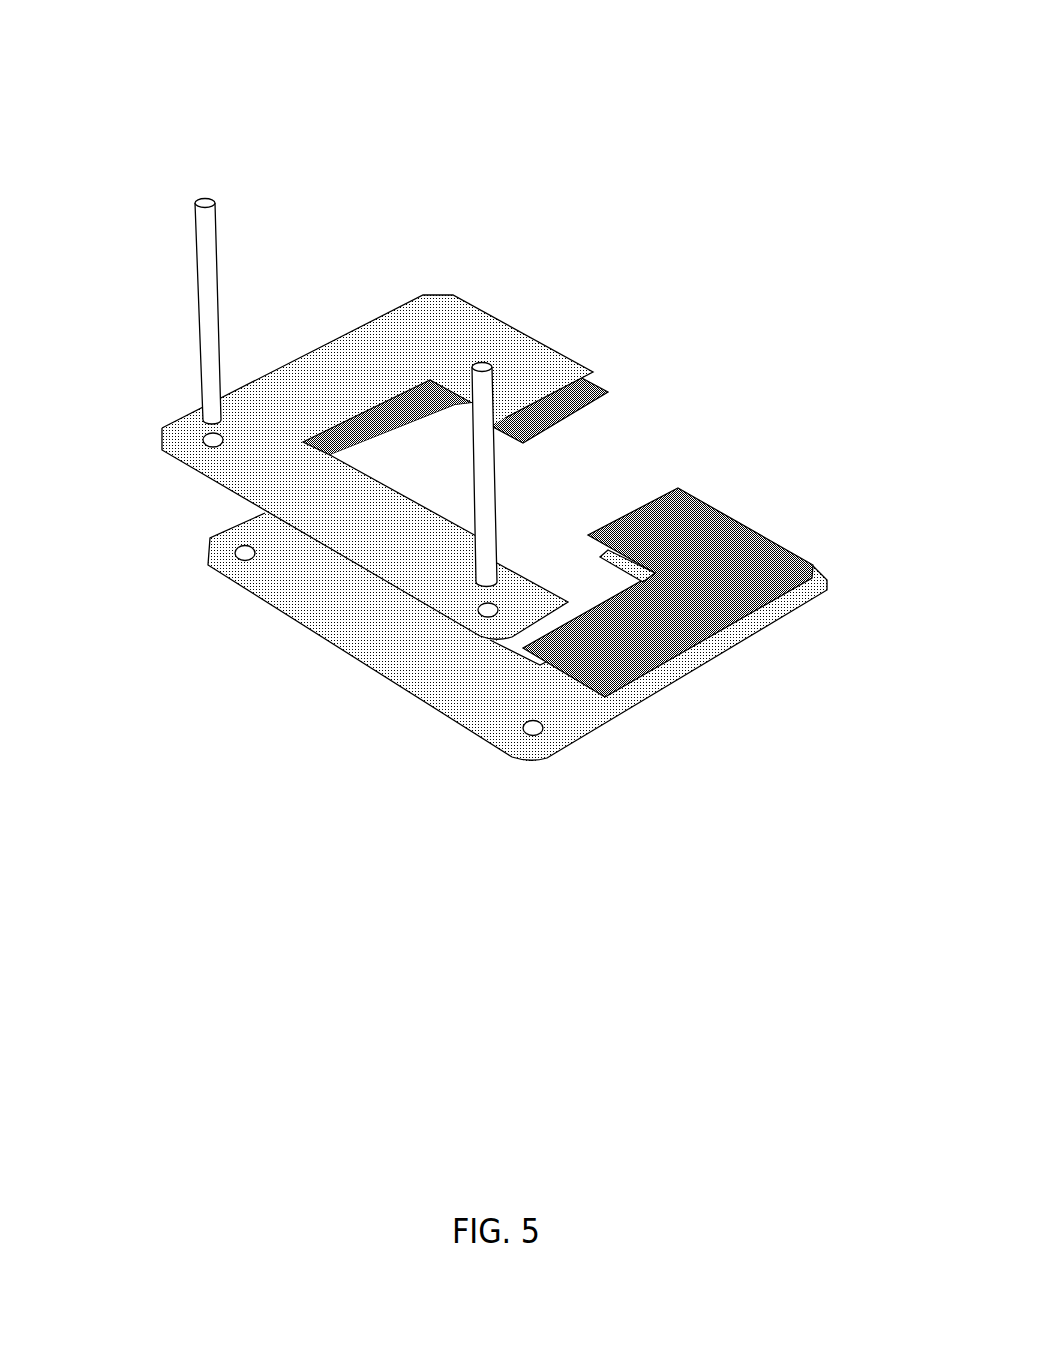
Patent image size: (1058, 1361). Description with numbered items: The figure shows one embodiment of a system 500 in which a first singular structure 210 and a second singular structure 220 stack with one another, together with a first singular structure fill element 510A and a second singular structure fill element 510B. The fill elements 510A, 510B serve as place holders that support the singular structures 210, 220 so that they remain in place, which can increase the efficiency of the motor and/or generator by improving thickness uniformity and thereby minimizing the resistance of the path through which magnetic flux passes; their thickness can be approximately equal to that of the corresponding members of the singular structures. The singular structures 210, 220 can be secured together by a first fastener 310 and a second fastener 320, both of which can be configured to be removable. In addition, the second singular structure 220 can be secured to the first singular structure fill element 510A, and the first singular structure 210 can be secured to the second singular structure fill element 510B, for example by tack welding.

The system 500 is at (620, 60).
The first singular structure 210 is at (332, 610).
The second singular structure 220 is at (375, 335).
The first fastener 310 is at (208, 253).
The second fastener 320 is at (487, 478).
The first singular structure fill element 510A is at (568, 398).
The second singular structure fill element 510B is at (697, 593).